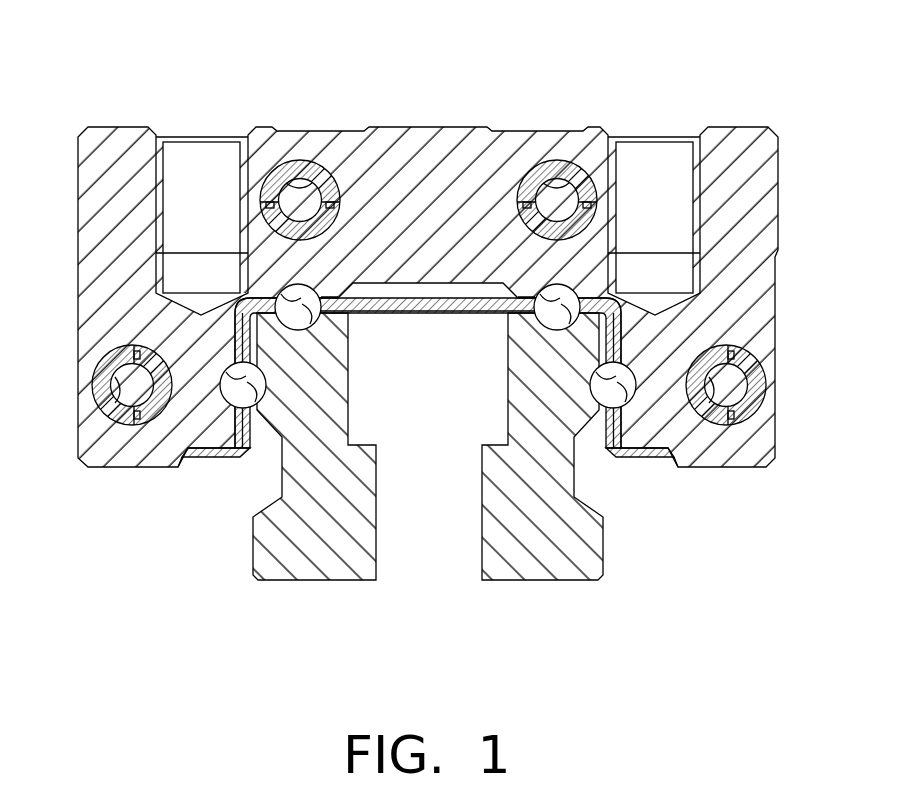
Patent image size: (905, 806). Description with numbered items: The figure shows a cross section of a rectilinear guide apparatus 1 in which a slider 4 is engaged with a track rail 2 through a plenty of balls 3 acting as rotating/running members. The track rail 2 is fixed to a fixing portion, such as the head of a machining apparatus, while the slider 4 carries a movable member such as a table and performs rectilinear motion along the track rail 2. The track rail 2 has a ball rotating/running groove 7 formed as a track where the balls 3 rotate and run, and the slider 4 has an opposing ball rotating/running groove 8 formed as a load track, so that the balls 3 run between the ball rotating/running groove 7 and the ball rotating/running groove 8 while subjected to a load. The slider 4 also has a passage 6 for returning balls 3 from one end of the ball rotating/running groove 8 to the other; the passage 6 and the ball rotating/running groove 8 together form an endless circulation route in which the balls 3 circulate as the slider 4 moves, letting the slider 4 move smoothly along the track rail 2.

The rectilinear guide apparatus 1 is at (767, 114).
The track rail 2 is at (533, 568).
The balls 3 is at (304, 285).
The slider 4 is at (417, 146).
The passage 6 is at (305, 182).
The ball rotating/running groove 7 is at (300, 298).
The ball rotating/running groove 8 is at (256, 293).